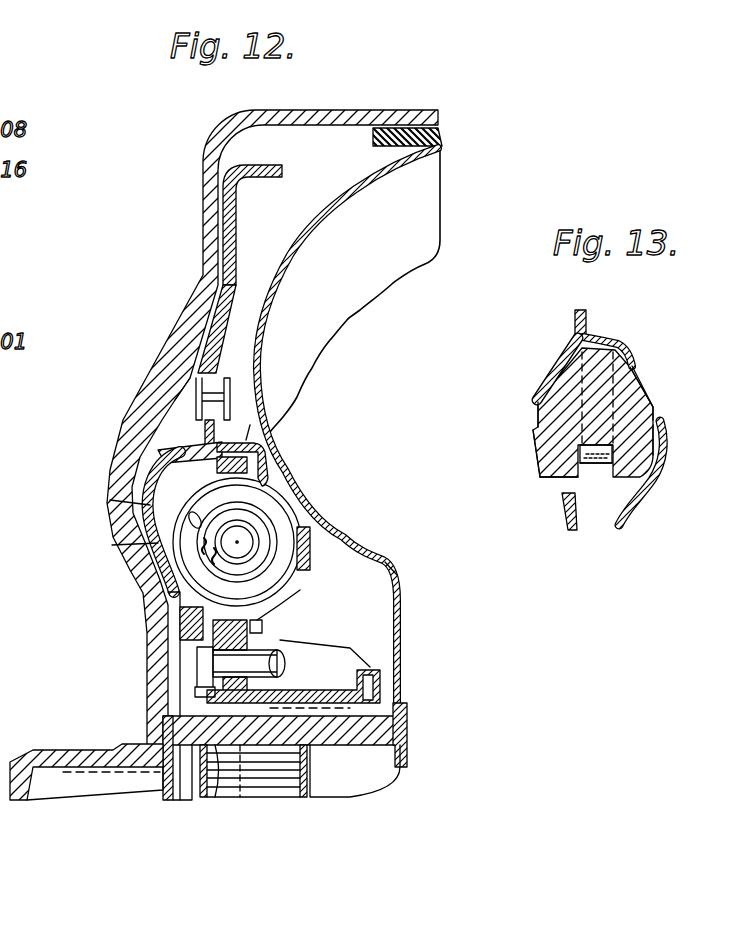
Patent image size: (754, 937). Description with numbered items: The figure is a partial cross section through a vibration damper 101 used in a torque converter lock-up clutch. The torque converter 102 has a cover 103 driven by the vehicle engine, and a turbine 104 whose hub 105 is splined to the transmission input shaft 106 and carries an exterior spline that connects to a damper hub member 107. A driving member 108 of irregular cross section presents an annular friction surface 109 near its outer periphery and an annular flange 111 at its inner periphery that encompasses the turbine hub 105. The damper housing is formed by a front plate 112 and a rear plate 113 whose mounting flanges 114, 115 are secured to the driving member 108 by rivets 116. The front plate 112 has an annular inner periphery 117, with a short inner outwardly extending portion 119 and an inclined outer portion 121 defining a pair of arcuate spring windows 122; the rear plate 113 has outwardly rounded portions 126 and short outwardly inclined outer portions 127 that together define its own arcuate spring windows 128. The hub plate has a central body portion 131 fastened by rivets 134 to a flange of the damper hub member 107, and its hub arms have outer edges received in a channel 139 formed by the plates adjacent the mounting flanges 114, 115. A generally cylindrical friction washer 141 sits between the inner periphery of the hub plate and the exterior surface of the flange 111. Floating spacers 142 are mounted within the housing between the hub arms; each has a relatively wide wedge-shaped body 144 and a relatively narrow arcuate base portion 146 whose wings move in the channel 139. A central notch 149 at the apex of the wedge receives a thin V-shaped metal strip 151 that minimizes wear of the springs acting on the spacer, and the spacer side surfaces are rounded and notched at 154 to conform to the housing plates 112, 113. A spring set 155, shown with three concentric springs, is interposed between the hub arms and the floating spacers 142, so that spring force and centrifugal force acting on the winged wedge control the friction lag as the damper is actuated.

In FIG. 12, the vibration damper 101 is at (245, 424).
In FIG. 12, the torque converter 102 is at (429, 100).
In FIG. 12, the cover 103 is at (337, 90).
In FIG. 12, the turbine 104 is at (310, 213).
In FIG. 12, the hub 105 is at (360, 730).
In FIG. 12, the transmission input shaft 106 is at (63, 777).
In FIG. 12, the damper hub member 107 is at (317, 690).
In FIG. 12, the driving member 108 is at (212, 312).
In FIG. 12, the annular friction surface 109 is at (213, 228).
In FIG. 12, the annular flange 111 is at (217, 747).
In FIG. 12, the front plate 112 is at (140, 510).
In FIG. 13, the front plate 112 is at (530, 390).
In FIG. 12, the rear plate 113 is at (320, 523).
In FIG. 13, the rear plate 113 is at (664, 441).
In FIG. 12, the mounting flange 114 is at (195, 442).
In FIG. 12, the mounting flange 115 is at (213, 378).
In FIG. 12, the rivets 116 is at (197, 403).
In FIG. 12, the annular inner periphery 117 is at (180, 622).
In FIG. 12, the short inner outwardly extending portion 119 is at (170, 598).
In FIG. 13, the short inner outwardly extending portion 119 is at (562, 498).
In FIG. 12, the inclined outer outwardly extending portion 121 is at (183, 462).
In FIG. 13, the inclined outer outwardly extending portion 121 is at (547, 373).
In FIG. 12, the arcuate spring windows 122 is at (125, 547).
In FIG. 13, the arcuate spring windows 122 is at (550, 482).
In FIG. 13, the outwardly rounded portions 126 is at (652, 478).
In FIG. 13, the short outwardly inclined outer portions 127 is at (630, 360).
In FIG. 13, the arcuate spring windows 128 is at (663, 410).
In FIG. 12, the central body portion 131 is at (258, 620).
In FIG. 12, the rivets 134 is at (222, 660).
In FIG. 12, the channel 139 is at (253, 446).
In FIG. 13, the channel 139 is at (612, 352).
In FIG. 12, the friction washer 141 is at (240, 703).
In FIG. 13, the floating spacers 142 is at (522, 438).
In FIG. 13, the wedge-shaped body 144 is at (643, 395).
In FIG. 13, the arcuate base portion 146 is at (600, 335).
In FIG. 13, the central notch 149 is at (598, 470).
In FIG. 13, the thin metal strip 151 is at (580, 448).
In FIG. 13, the notch 154 is at (530, 420).
In FIG. 12, the spring set 155 is at (290, 507).